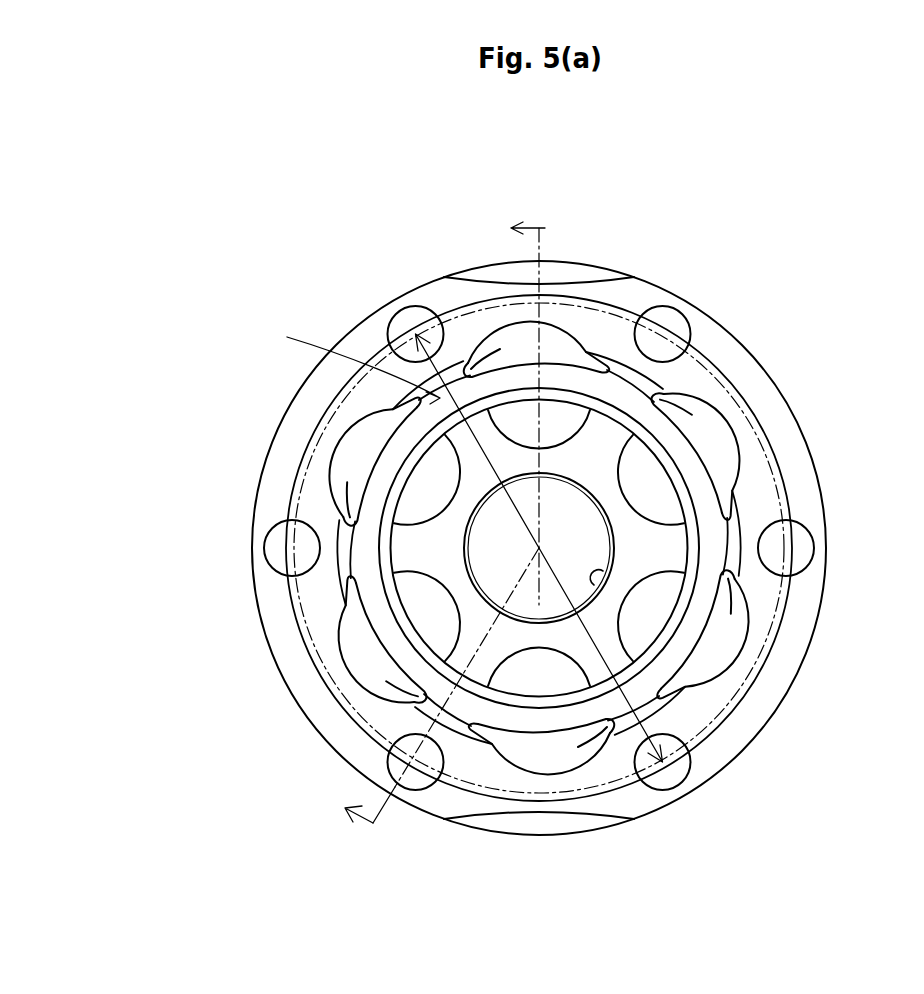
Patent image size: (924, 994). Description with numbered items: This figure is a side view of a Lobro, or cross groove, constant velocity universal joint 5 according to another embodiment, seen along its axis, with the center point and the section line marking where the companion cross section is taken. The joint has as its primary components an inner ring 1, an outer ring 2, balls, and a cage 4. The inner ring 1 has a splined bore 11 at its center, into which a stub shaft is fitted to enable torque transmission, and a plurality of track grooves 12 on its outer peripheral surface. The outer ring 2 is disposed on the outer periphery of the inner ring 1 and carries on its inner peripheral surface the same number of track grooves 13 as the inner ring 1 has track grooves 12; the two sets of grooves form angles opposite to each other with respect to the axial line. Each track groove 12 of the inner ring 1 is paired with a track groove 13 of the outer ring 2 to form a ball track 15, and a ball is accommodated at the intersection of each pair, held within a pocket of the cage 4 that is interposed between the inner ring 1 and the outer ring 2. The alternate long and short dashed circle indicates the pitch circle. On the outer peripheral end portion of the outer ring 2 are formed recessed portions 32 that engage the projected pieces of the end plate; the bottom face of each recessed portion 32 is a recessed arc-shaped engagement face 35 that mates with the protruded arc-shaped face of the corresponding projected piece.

The inner ring 1 is at (450, 560).
The outer ring 2 is at (806, 485).
The cage 4 is at (655, 402).
The constant velocity universal joint 5 is at (309, 260).
The splined bore 11 is at (588, 585).
The track grooves 12 is at (505, 650).
The track grooves 13 is at (348, 470).
The ball tracks 15 is at (361, 681).
The recessed portions 32 is at (575, 270).
The recessed arc-shaped engagement face 35 is at (500, 270).